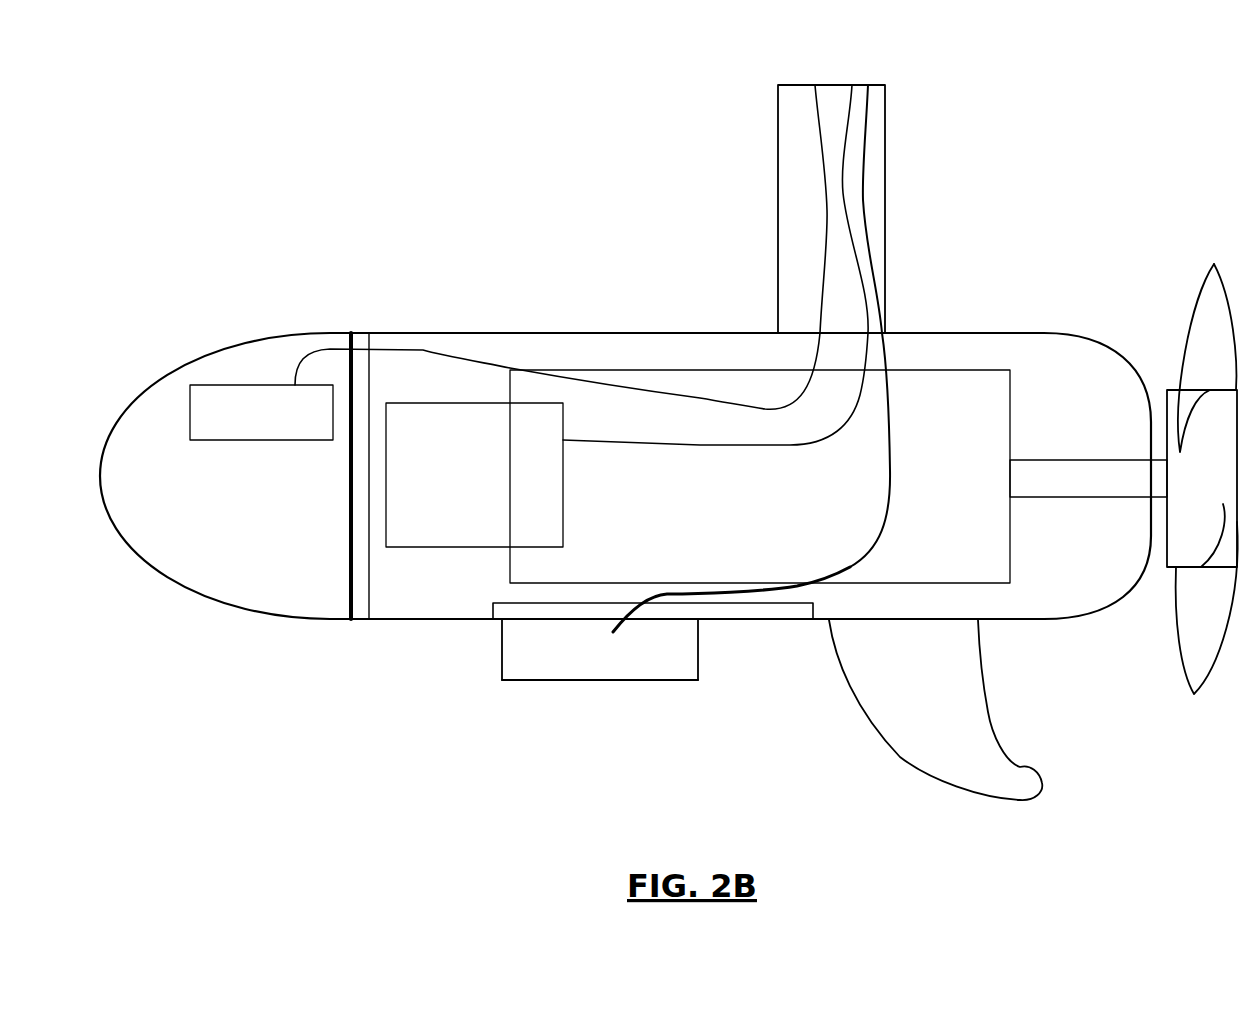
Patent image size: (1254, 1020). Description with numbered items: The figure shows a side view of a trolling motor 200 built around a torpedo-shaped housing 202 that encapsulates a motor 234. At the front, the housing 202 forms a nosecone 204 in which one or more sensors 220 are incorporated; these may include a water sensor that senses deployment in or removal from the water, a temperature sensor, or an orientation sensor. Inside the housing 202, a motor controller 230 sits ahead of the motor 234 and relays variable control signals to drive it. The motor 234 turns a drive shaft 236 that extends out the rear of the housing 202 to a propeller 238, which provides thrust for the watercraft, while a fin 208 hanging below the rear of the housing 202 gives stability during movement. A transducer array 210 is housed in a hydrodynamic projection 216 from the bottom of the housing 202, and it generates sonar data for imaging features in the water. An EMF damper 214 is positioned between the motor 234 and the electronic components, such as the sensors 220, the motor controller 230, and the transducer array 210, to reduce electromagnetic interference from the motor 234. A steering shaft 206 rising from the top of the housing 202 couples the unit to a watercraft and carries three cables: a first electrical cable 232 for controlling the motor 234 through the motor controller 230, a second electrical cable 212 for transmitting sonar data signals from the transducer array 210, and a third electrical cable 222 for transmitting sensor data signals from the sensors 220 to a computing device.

The trolling motor 200 is at (662, 426).
The housing 202 is at (540, 332).
The nosecone 204 is at (219, 353).
The steering shaft 206 is at (778, 210).
The fin 208 is at (935, 710).
The transducer array 210 is at (600, 649).
The second electrical cable 212 is at (850, 567).
The EMF damper 214 is at (360, 612).
The hydrodynamic projection 216 is at (600, 680).
The sensor 220 is at (261, 412).
The third electrical cable 222 is at (423, 350).
The motor controller 230 is at (474, 475).
The first electrical cable 232 is at (700, 445).
The motor 234 is at (760, 476).
The drive shaft 236 is at (1088, 478).
The propeller 238 is at (1184, 338).